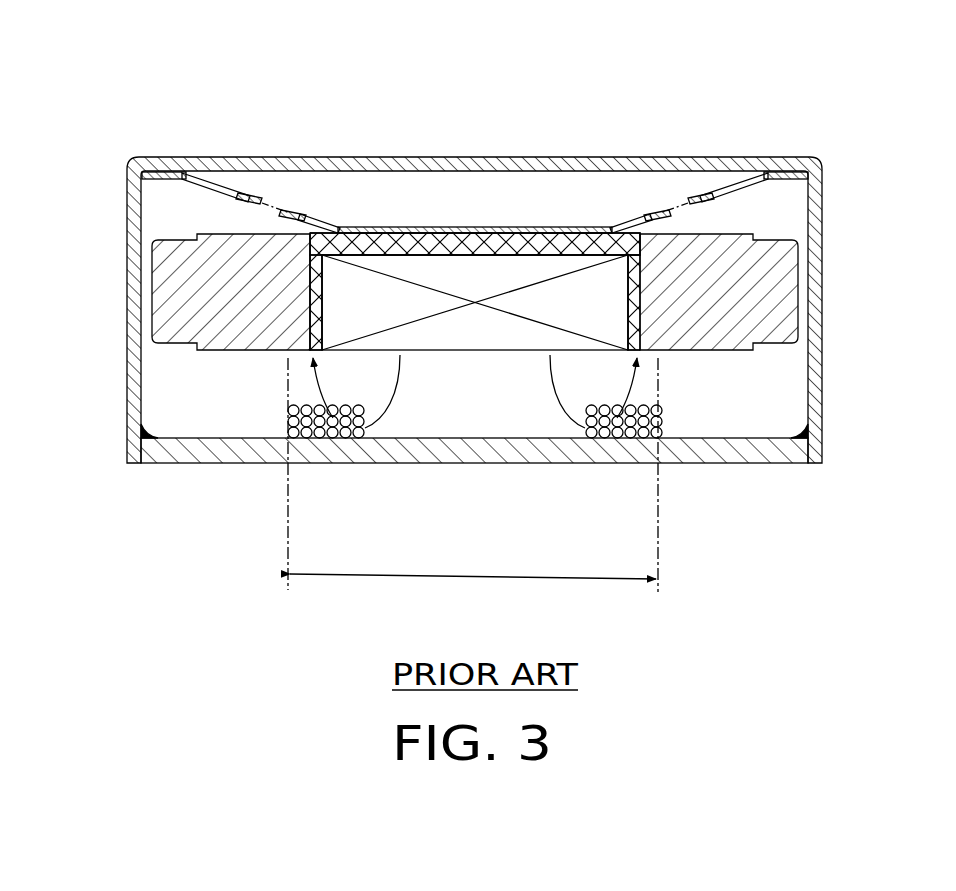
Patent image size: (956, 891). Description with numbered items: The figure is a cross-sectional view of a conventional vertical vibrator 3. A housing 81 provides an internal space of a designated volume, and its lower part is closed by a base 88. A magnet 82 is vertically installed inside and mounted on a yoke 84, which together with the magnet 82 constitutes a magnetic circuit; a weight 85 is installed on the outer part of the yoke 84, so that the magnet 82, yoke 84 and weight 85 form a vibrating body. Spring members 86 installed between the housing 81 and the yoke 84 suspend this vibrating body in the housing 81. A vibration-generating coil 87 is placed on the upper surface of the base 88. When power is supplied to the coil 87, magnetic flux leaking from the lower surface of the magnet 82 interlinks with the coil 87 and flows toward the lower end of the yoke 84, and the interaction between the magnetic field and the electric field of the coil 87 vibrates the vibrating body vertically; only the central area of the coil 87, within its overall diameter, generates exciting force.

The vertical vibrator 3 is at (681, 131).
The housing 81 is at (128, 222).
The magnet 82 is at (528, 268).
The yoke 84 is at (440, 245).
The weight 85 is at (167, 311).
The spring members 86 is at (256, 196).
The vibration-generating coil 87 is at (348, 440).
The base 88 is at (745, 458).